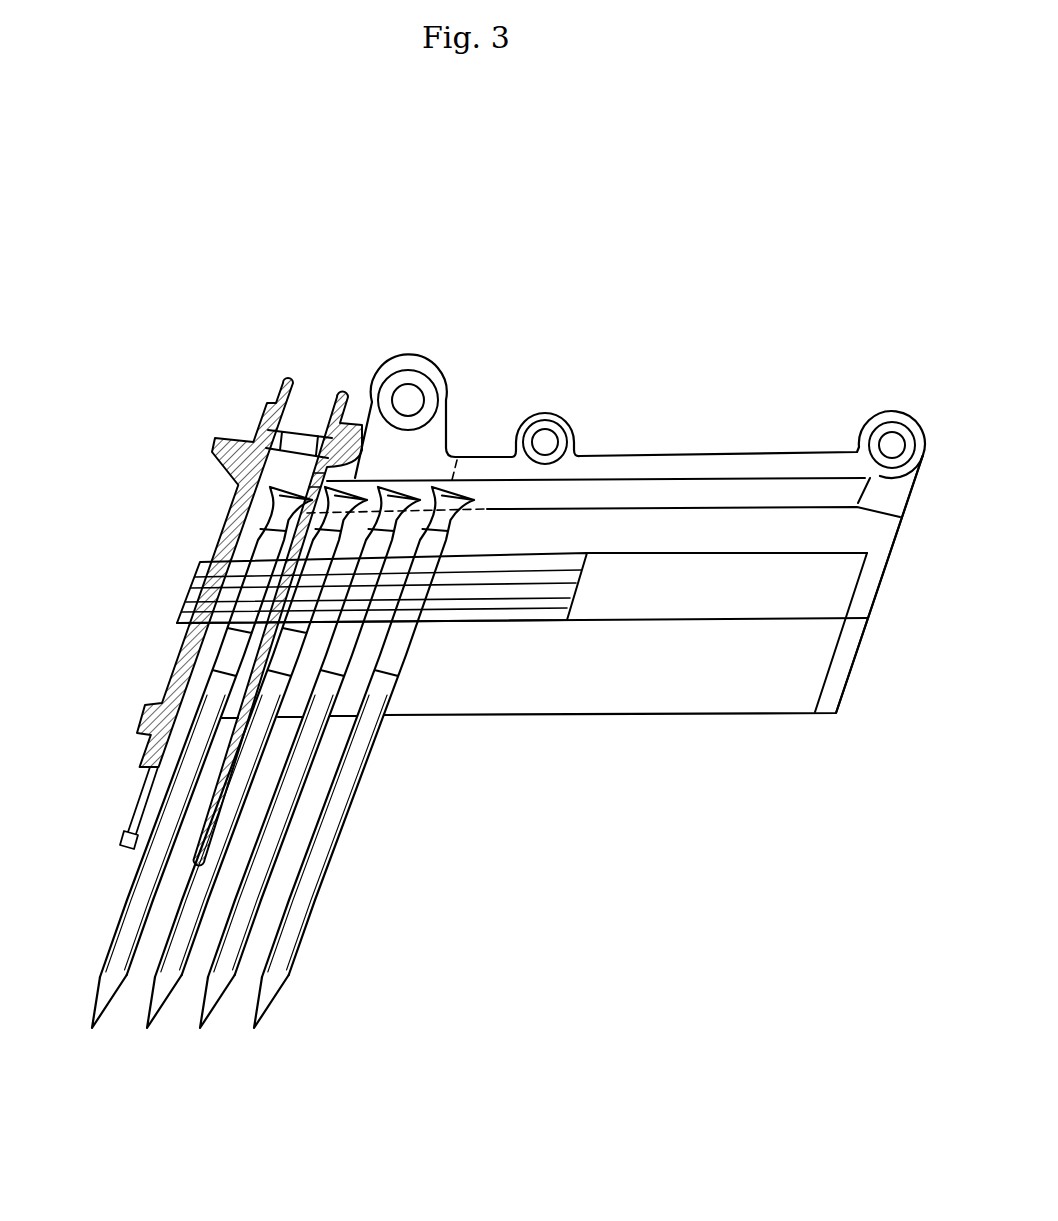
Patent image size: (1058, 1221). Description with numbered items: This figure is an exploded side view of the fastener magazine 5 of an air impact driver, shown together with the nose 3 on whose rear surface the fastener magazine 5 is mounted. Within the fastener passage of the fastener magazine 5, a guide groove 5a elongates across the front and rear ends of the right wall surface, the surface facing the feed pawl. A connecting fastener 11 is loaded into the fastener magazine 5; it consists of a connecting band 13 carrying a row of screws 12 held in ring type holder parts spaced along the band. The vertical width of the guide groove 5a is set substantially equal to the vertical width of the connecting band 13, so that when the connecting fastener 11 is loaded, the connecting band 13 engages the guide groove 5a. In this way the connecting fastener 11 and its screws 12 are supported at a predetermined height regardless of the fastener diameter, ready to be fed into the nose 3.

The nose 3 is at (183, 662).
The fastener magazine 5 is at (683, 452).
The guide groove 5a is at (838, 583).
The connecting fastener 11 is at (125, 902).
The screw 12 is at (150, 1017).
The connecting band 13 is at (200, 562).